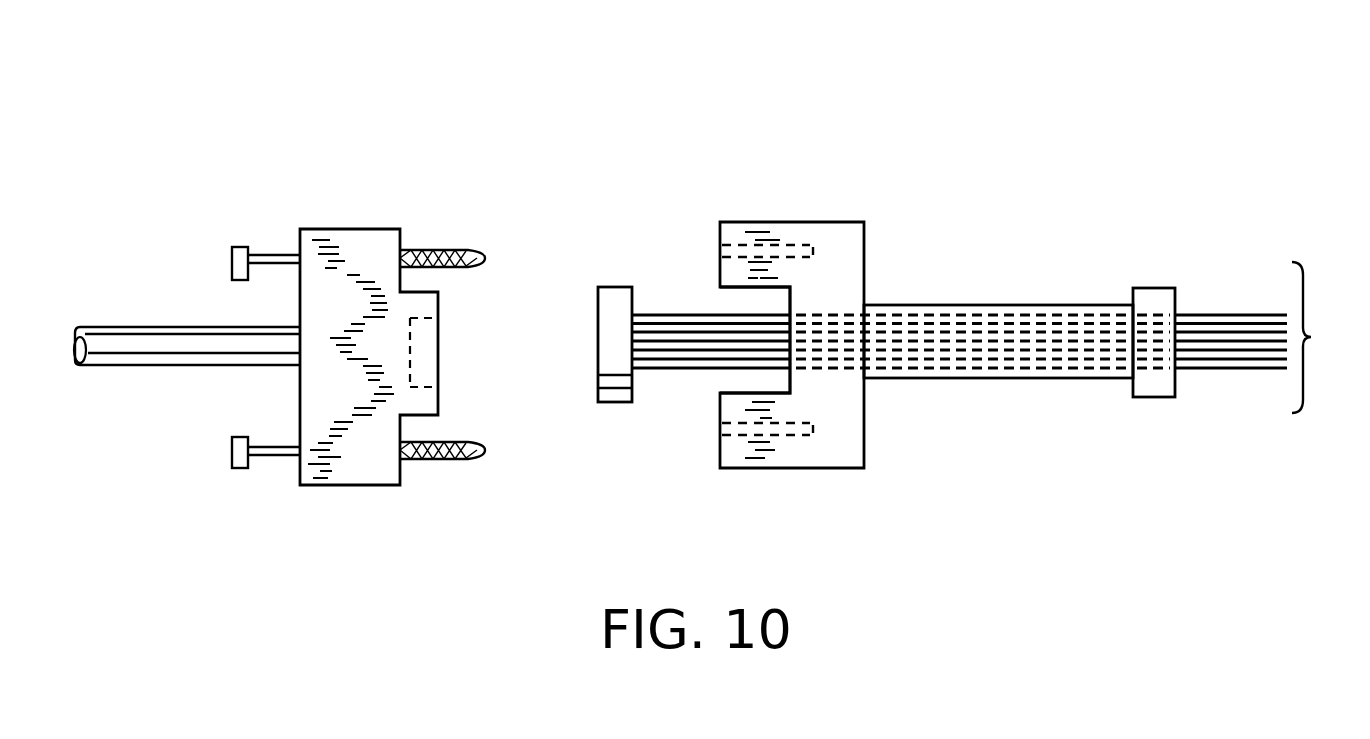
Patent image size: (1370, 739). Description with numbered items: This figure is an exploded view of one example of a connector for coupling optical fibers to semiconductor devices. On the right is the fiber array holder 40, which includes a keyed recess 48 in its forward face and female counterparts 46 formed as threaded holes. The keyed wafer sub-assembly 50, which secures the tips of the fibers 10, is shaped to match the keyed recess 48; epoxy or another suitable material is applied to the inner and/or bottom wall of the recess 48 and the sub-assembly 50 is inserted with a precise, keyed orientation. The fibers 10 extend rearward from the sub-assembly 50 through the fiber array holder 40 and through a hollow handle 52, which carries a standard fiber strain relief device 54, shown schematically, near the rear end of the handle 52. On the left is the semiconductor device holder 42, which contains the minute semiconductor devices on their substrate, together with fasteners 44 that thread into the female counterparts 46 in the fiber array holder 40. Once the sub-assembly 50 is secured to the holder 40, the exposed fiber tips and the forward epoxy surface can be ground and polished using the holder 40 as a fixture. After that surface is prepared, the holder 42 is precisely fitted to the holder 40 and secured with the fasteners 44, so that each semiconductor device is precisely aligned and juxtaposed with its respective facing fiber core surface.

The fibers 10 is at (1000, 337).
The fiber array holder 40 is at (843, 210).
The semiconductor device holder 42 is at (344, 215).
The fasteners 44 is at (437, 250).
The female counterparts 46 is at (757, 245).
The keyed recess 48 is at (745, 295).
The keyed wafer sub-assembly 50 is at (610, 393).
The hollow handle 52 is at (970, 304).
The fiber strain relief device 54 is at (1150, 290).